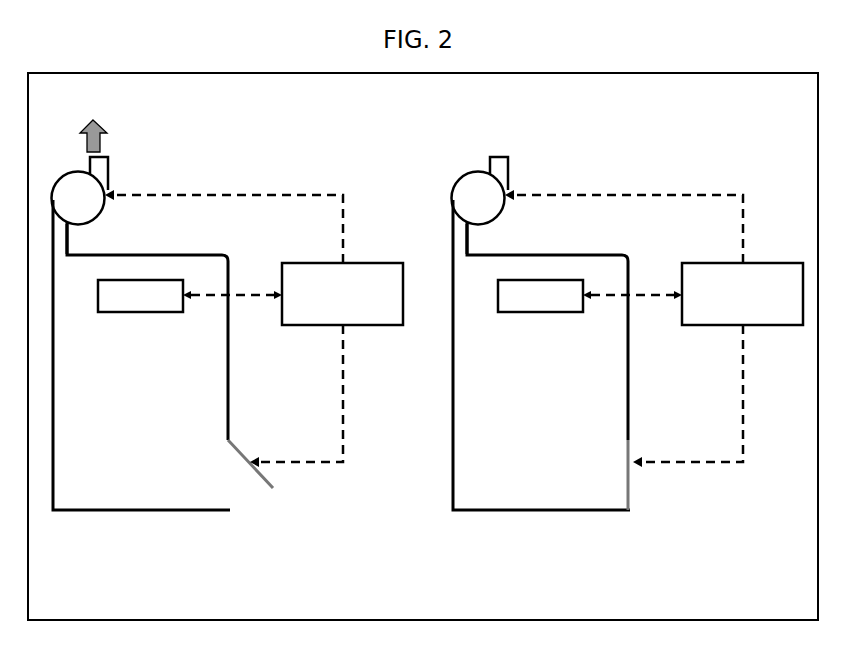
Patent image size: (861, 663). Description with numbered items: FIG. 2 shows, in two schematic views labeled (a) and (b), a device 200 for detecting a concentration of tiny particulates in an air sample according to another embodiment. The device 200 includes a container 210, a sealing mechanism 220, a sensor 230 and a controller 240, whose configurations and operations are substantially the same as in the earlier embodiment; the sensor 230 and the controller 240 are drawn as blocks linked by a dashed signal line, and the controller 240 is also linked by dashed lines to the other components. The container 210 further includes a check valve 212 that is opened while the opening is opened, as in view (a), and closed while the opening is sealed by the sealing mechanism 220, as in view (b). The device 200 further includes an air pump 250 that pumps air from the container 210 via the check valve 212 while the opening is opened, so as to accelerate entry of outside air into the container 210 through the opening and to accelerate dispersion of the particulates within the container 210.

The device 200 is at (425, 349).
The container 210 is at (232, 272).
The check valve 212 is at (68, 248).
The sealing mechanism 220 is at (273, 488).
The sensor 230 is at (340, 296).
The controller 240 is at (542, 294).
The air pump 250 is at (108, 158).